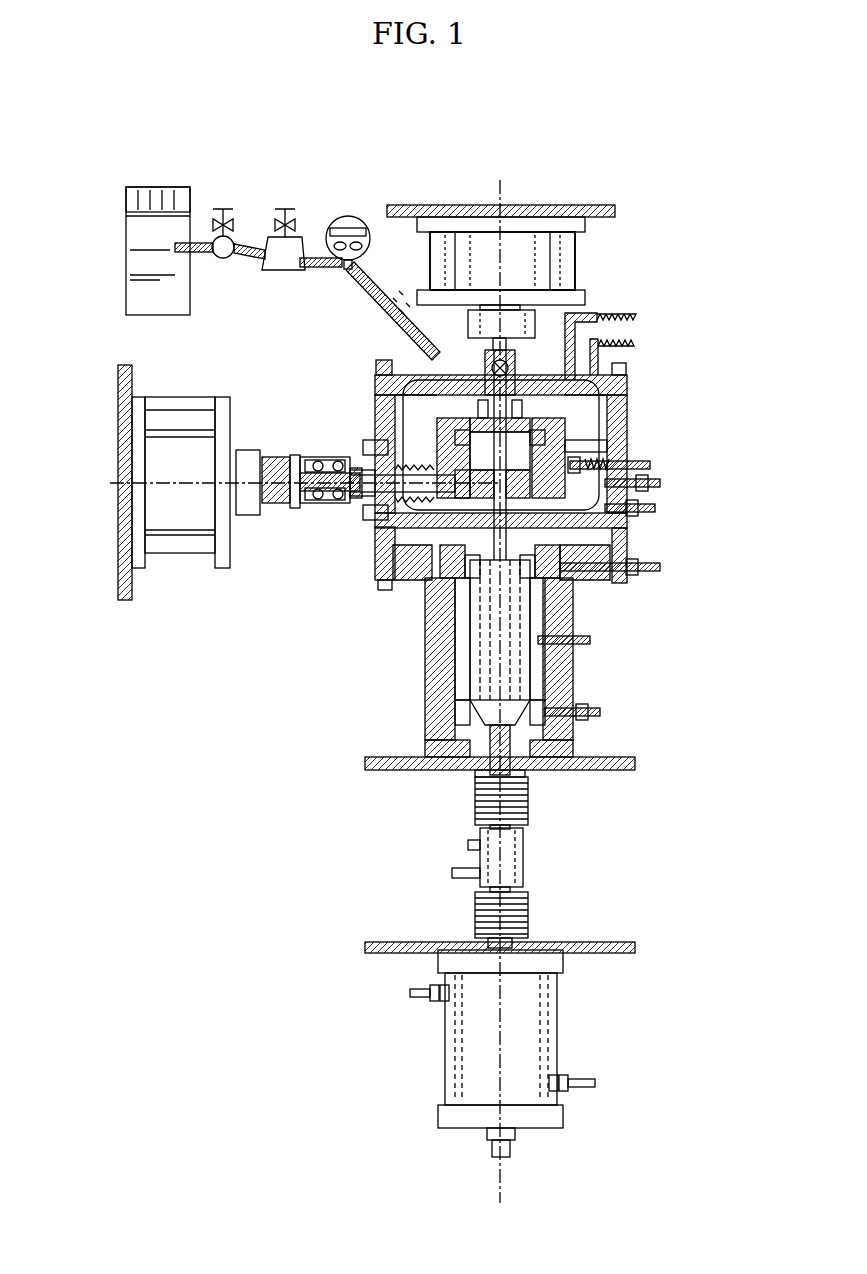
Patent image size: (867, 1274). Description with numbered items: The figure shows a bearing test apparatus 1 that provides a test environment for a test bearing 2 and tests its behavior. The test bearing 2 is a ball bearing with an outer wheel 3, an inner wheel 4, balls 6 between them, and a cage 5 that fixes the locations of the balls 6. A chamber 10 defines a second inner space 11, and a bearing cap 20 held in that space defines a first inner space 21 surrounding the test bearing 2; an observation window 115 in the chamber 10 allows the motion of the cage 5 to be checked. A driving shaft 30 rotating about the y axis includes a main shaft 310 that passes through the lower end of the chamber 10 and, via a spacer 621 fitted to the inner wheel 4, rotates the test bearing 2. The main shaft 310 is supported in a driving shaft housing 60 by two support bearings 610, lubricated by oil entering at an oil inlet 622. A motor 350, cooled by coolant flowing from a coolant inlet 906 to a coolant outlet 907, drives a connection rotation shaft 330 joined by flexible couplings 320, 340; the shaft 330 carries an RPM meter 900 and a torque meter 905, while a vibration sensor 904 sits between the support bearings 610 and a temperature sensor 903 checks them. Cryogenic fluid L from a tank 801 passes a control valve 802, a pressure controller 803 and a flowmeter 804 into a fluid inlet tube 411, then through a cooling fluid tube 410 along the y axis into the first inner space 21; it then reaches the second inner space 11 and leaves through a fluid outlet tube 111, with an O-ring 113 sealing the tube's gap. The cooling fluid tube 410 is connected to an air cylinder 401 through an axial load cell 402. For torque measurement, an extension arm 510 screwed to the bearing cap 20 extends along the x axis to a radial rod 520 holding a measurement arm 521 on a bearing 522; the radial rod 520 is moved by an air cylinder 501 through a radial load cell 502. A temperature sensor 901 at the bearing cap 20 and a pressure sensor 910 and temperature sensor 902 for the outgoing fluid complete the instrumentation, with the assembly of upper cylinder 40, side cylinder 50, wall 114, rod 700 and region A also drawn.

The bearing test apparatus 1 is at (418, 172).
The test bearing 2 is at (435, 580).
The outer wheel 3 is at (450, 468).
The inner wheel 4 is at (402, 378).
The cage 5 is at (450, 440).
The balls 6 is at (377, 520).
The chamber 10 is at (548, 452).
The second inner space 11 is at (620, 387).
The bearing cap 20 is at (575, 447).
The first inner space 21 is at (600, 462).
The driving shaft 30 is at (455, 700).
The cylinder 40 is at (563, 217).
The side cylinder 50 is at (203, 518).
The driving shaft housing 60 is at (510, 667).
The fluid outlet tube 111 is at (615, 332).
The O-ring 113 is at (384, 372).
The side wall 114 is at (627, 420).
The lower frame 115 is at (600, 523).
The main shaft 310 is at (520, 675).
The flexible coupling 320 is at (530, 795).
The connection rotation shaft 330 is at (525, 855).
The flexible coupling 340 is at (530, 912).
The motor 350 is at (560, 1010).
The air cylinder 401 is at (540, 260).
The axial load cell 402 is at (530, 320).
The cooling fluid tube 410 is at (600, 365).
The fluid inlet tube 411 is at (485, 368).
The air cylinder 501 is at (185, 520).
The radial load cell 502 is at (250, 515).
The extension arm 510 is at (360, 505).
The radial rod 520 is at (262, 455).
The measurement arm 521 is at (303, 457).
The bearing 522 is at (317, 455).
The support bearing 610 is at (572, 598).
The spacer 621 is at (405, 583).
The oil inlet 622 is at (428, 748).
The adjusting rod 700 is at (655, 468).
The tank 801 is at (148, 193).
The control valve 802 is at (225, 208).
The pressure controller 803 is at (285, 207).
The flowmeter 804 is at (345, 215).
The RPM meter 900 is at (468, 845).
The temperature sensor 901 is at (660, 493).
The temperature sensor 902 is at (655, 510).
The temperature sensor 903 is at (655, 565).
The vibration sensor 904 is at (595, 640).
The torque meter 905 is at (452, 873).
The coolant inlet 906 is at (410, 993).
The coolant outlet 907 is at (595, 1083).
The pressure sensor 910 is at (360, 515).
The region A is at (393, 414).
The cryogenic fluid L is at (365, 295).
The x axis x is at (118, 483).
The y axis y is at (500, 200).